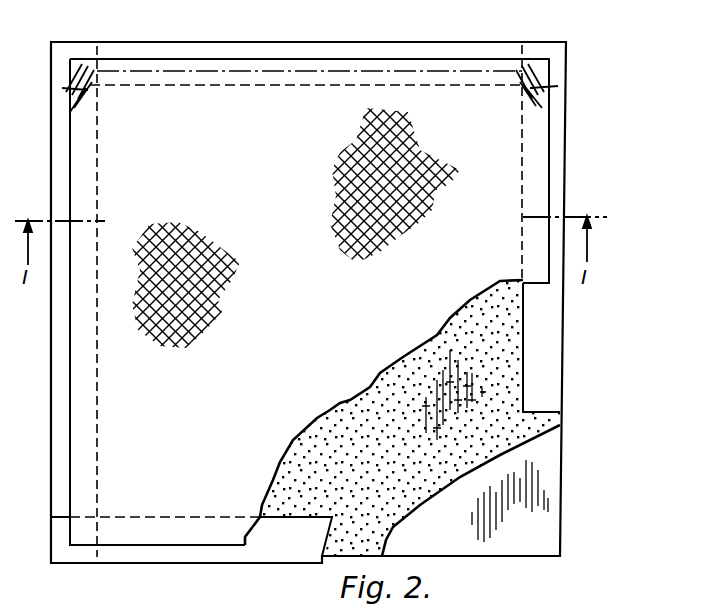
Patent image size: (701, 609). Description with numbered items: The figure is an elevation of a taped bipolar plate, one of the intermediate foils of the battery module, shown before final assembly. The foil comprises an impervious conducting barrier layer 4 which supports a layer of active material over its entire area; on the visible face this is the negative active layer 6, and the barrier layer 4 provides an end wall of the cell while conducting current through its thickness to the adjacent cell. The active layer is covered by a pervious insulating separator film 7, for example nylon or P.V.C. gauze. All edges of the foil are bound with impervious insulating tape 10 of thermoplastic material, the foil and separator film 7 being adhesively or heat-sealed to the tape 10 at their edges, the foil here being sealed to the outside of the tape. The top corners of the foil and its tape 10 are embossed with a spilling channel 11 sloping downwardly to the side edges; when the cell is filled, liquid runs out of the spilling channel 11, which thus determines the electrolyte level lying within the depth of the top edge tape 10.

The barrier layer 4 is at (386, 70).
The negative active layer 6 is at (510, 403).
The separator film 7 is at (510, 178).
The insulating tape 10 is at (131, 50).
The spilling channel 11 is at (58, 90).